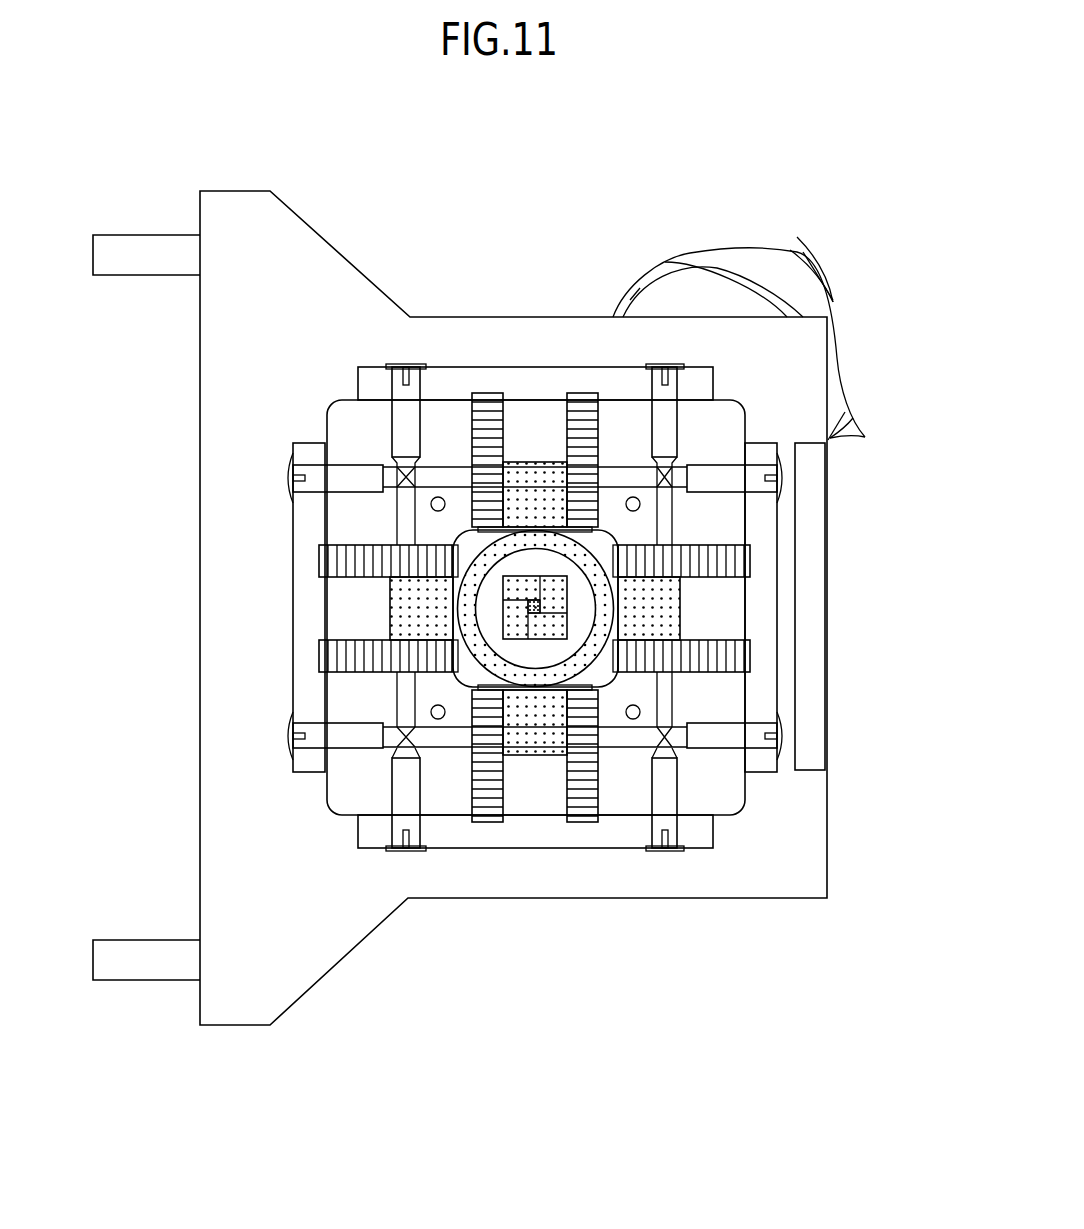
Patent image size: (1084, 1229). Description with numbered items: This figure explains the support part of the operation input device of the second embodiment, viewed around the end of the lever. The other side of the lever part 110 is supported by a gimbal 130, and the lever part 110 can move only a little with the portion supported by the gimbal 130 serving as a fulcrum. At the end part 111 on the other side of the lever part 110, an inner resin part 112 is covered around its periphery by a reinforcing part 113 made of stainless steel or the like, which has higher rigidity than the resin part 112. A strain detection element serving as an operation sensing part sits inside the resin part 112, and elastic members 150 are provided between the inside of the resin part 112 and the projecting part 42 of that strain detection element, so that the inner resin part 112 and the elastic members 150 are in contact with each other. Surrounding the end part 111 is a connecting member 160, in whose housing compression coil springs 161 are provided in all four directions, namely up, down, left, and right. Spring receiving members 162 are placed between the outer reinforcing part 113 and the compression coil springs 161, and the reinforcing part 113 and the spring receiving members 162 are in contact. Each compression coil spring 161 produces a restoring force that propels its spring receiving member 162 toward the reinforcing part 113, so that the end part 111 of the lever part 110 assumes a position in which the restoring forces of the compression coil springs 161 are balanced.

The lever part 110 is at (745, 265).
The end part 111 is at (412, 596).
The resin part 112 is at (490, 597).
The reinforcing part 113 is at (490, 593).
The gimbal 130 is at (600, 317).
The elastic members 150 is at (517, 642).
The connecting member 160 is at (437, 385).
The compression coil springs 161 is at (575, 432).
The spring receiving members 162 is at (541, 490).
The projecting part 42 is at (528, 600).